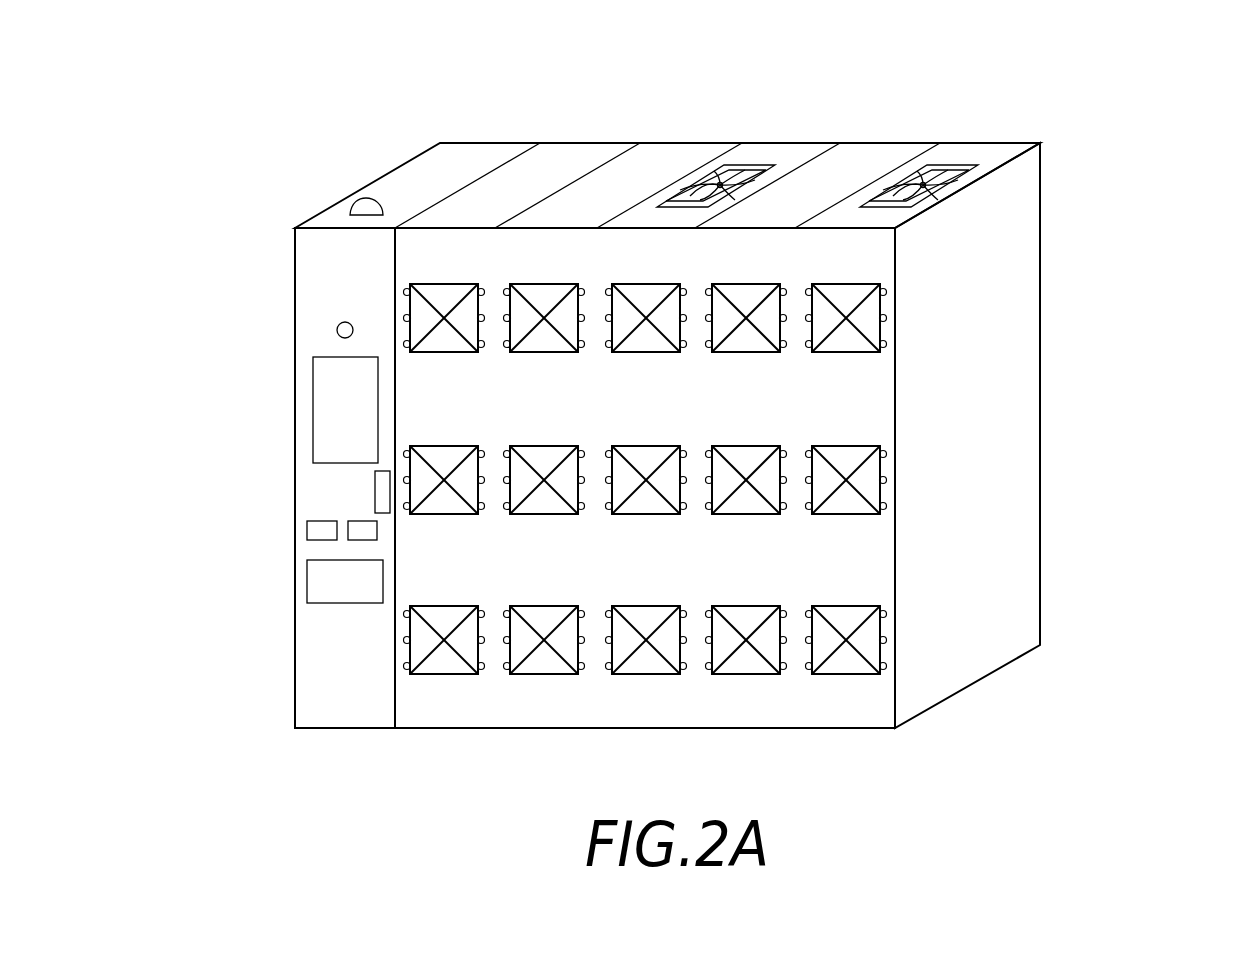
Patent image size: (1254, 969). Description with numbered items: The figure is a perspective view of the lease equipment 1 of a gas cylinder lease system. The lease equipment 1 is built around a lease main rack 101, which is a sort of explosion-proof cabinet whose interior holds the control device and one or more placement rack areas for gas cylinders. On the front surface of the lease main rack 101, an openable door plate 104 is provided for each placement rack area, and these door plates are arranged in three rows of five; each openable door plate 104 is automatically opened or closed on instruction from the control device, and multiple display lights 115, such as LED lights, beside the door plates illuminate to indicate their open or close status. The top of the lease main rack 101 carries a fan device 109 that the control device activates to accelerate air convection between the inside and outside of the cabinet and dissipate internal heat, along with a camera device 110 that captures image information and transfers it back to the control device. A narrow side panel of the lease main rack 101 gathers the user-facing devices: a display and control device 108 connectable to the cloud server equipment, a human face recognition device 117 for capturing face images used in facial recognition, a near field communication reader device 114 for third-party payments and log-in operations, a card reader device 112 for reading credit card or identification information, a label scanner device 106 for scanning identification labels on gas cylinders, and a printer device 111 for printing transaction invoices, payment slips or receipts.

The lease equipment 1 is at (348, 128).
The lease main rack 101 is at (1005, 237).
The openable door plate 104 is at (868, 330).
The label scanner device 106 is at (358, 521).
The display and control device 108 is at (313, 410).
The fan device 109 is at (945, 165).
The camera device 110 is at (366, 207).
The printer device 111 is at (307, 580).
The card reader device 112 is at (305, 530).
The near field communication reader device 114 is at (375, 490).
The display lights 115 is at (882, 477).
The human face recognition device 117 is at (339, 327).